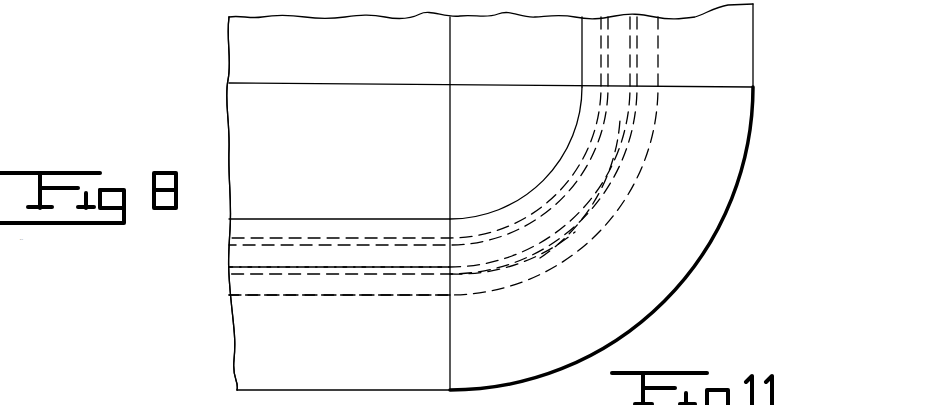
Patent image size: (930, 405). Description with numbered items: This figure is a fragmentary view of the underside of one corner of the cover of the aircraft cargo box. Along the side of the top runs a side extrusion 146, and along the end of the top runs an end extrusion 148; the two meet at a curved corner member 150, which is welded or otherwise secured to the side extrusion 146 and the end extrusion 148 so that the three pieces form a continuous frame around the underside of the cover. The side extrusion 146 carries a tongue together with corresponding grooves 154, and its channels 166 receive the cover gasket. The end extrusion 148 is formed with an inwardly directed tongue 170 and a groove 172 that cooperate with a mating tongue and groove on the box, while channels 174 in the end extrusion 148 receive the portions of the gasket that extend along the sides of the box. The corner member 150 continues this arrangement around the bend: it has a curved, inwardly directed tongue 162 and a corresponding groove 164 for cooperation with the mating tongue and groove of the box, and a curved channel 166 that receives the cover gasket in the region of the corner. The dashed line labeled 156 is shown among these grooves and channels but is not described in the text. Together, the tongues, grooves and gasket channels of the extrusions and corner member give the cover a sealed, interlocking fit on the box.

The side extrusion 146 is at (233, 356).
The end extrusion 148 is at (753, 50).
The corner member 150 is at (706, 285).
The grooves 154 is at (312, 297).
The intermediate dashed layer 156 is at (285, 267).
The curved inwardly directed tongue 162 is at (527, 195).
The groove 164 is at (566, 246).
The curved channel 166 is at (508, 270).
The inwardly directed tongue 170 is at (582, 46).
The groove 172 is at (656, 70).
The channels 174 is at (640, 40).